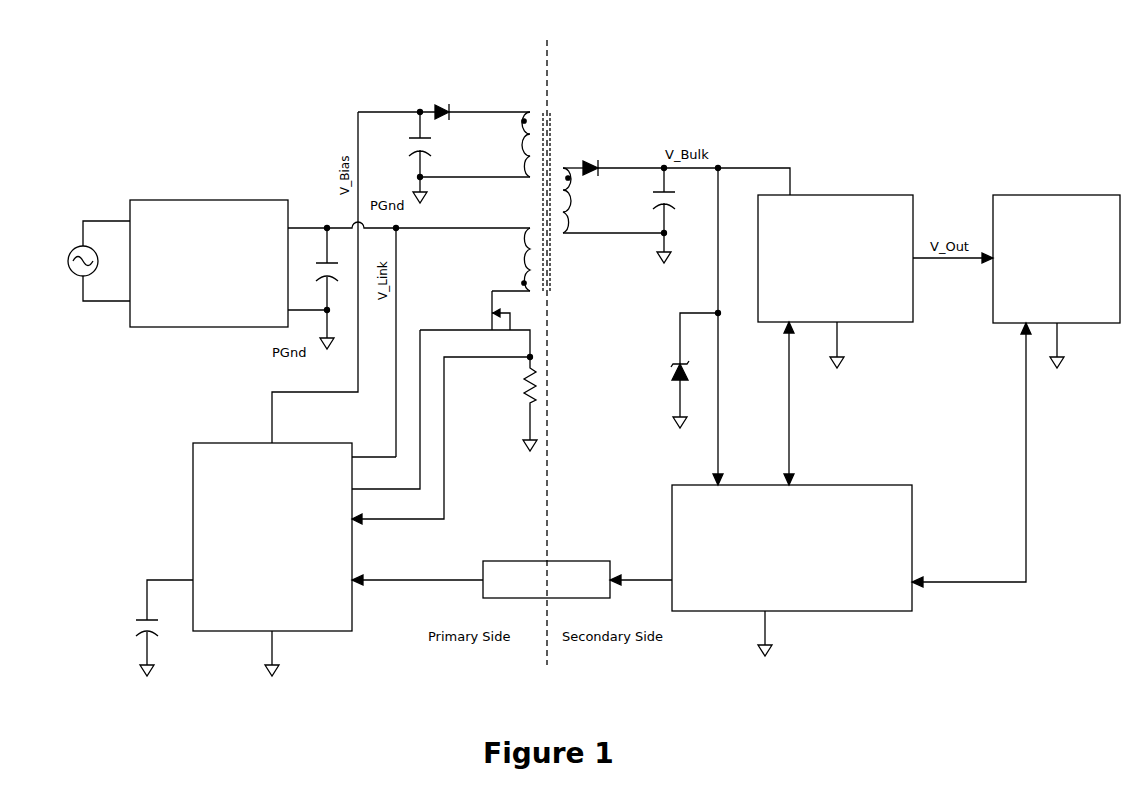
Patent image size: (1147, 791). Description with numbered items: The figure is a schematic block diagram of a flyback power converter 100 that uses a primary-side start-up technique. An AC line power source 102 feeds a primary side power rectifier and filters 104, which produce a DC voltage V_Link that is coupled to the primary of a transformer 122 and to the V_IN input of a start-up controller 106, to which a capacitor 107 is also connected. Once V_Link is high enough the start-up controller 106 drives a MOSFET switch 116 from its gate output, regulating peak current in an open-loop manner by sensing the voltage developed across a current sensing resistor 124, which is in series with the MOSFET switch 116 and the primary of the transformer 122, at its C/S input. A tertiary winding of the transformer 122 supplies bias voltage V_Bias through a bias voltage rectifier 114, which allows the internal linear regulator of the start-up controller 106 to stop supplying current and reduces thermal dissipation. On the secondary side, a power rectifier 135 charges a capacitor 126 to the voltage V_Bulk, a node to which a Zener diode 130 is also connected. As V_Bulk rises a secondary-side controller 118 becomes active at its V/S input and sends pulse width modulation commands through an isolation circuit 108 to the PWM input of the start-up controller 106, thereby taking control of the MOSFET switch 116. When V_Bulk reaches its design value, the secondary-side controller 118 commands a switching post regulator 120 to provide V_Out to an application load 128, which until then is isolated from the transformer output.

The flyback power converter 100 is at (885, 66).
The AC line power source 102 is at (70, 249).
The primary side power rectifier and filters 104 is at (190, 200).
The start-up controller 106 is at (228, 443).
The capacitor 107 is at (130, 629).
The isolation circuit 108 is at (517, 561).
The bias voltage rectifier 114 is at (437, 108).
The MOSFET switch 116 is at (492, 294).
The secondary-side controller 118 is at (870, 485).
The switching post regulator 120 is at (880, 195).
The transformer 122 is at (551, 126).
The current sensing resistor 124 is at (520, 378).
The capacitor 126 is at (680, 208).
The application load 128 is at (1057, 195).
The Zener diode 130 is at (676, 364).
The power rectifier 135 is at (591, 165).